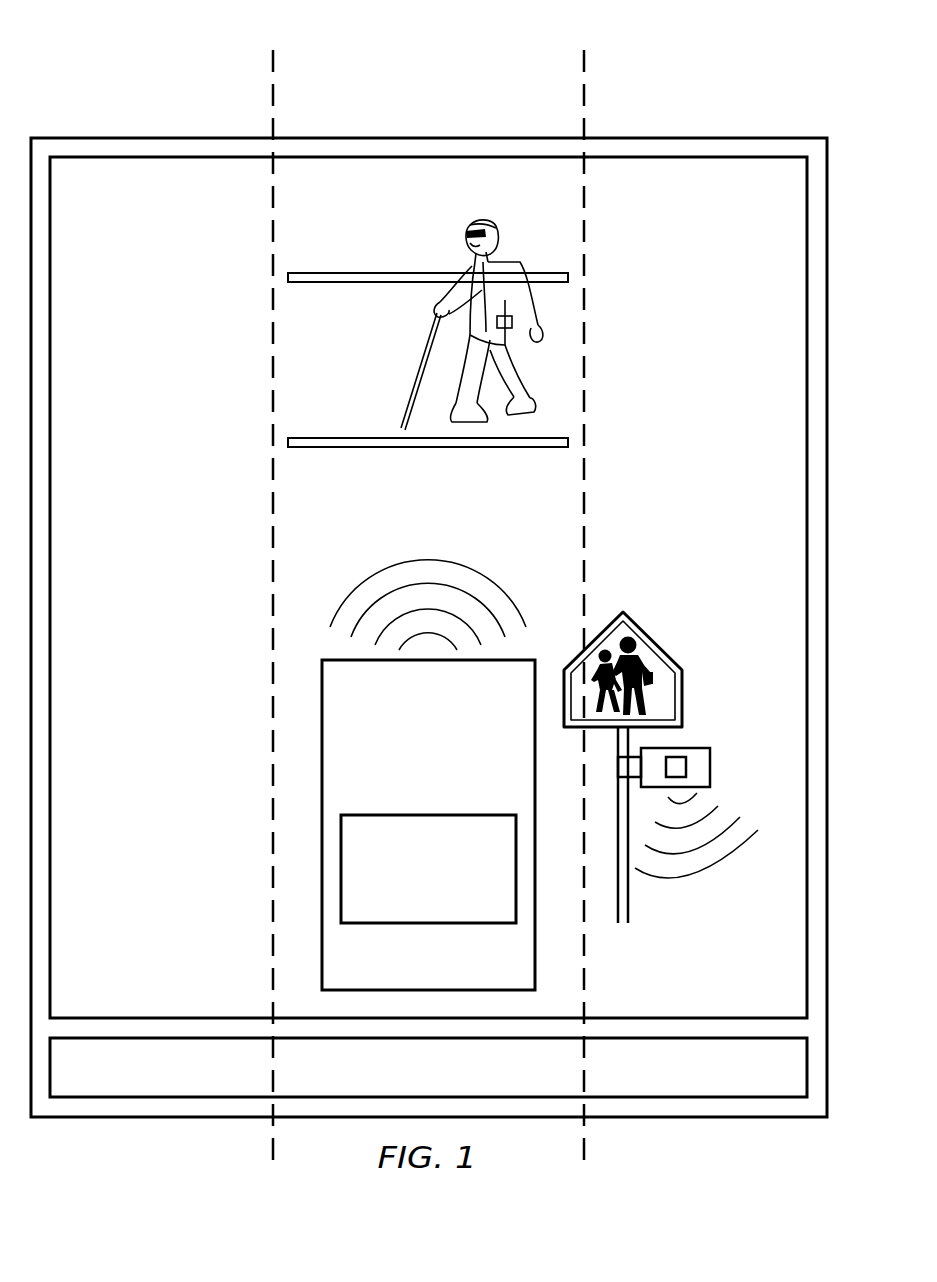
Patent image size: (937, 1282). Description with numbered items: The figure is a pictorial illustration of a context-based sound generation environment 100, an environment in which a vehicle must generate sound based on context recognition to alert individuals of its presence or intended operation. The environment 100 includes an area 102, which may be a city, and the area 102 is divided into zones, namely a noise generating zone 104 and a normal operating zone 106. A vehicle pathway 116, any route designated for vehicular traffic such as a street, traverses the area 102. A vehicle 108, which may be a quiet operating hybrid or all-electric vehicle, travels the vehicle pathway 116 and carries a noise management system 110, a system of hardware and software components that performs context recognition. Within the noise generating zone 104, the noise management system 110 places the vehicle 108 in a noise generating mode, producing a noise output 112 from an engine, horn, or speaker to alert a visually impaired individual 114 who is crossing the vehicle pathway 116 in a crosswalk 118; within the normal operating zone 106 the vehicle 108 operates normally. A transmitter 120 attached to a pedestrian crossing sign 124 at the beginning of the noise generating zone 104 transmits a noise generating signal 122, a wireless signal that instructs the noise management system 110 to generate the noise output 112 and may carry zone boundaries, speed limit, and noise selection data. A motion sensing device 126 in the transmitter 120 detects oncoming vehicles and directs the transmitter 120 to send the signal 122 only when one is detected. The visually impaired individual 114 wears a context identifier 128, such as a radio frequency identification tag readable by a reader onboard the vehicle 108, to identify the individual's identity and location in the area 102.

The context-based sound generation environment 100 is at (165, 99).
The area 102 is at (683, 112).
The noise generating zone 104 is at (713, 277).
The normal operating zone 106 is at (531, 1084).
The vehicle 108 is at (410, 767).
The noise management system 110 is at (436, 948).
The noise output 112 is at (410, 544).
The visually impaired individual 114 is at (420, 243).
The vehicle pathway 116 is at (410, 115).
The crosswalk 118 is at (366, 385).
The transmitter 120 is at (695, 738).
The noise generating signal 122 is at (700, 986).
The sign 124 is at (650, 626).
The motion sensing device 126 is at (687, 767).
The context identifier 128 is at (512, 340).